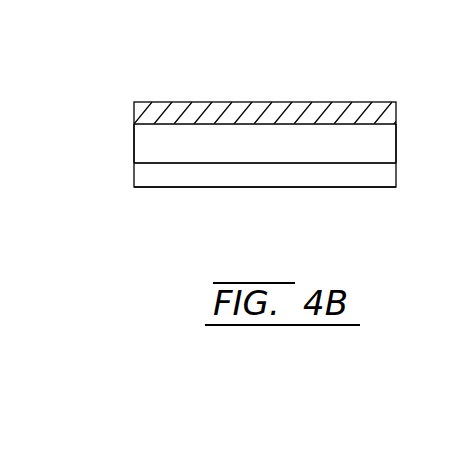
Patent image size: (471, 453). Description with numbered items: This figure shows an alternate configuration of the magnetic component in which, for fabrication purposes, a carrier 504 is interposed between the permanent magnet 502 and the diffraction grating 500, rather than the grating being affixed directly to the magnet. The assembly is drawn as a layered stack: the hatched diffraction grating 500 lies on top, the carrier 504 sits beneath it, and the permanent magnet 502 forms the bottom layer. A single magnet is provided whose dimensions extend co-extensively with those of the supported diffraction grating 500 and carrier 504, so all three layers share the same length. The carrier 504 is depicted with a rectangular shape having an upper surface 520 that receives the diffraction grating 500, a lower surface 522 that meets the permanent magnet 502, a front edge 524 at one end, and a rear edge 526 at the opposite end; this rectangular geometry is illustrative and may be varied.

The diffraction grating 500 is at (169, 102).
The upper surface 520 is at (318, 112).
The carrier 504 is at (134, 141).
The front edge 524 is at (134, 156).
The permanent magnet 502 is at (142, 179).
The rear edge 526 is at (396, 143).
The lower surface 522 is at (335, 163).